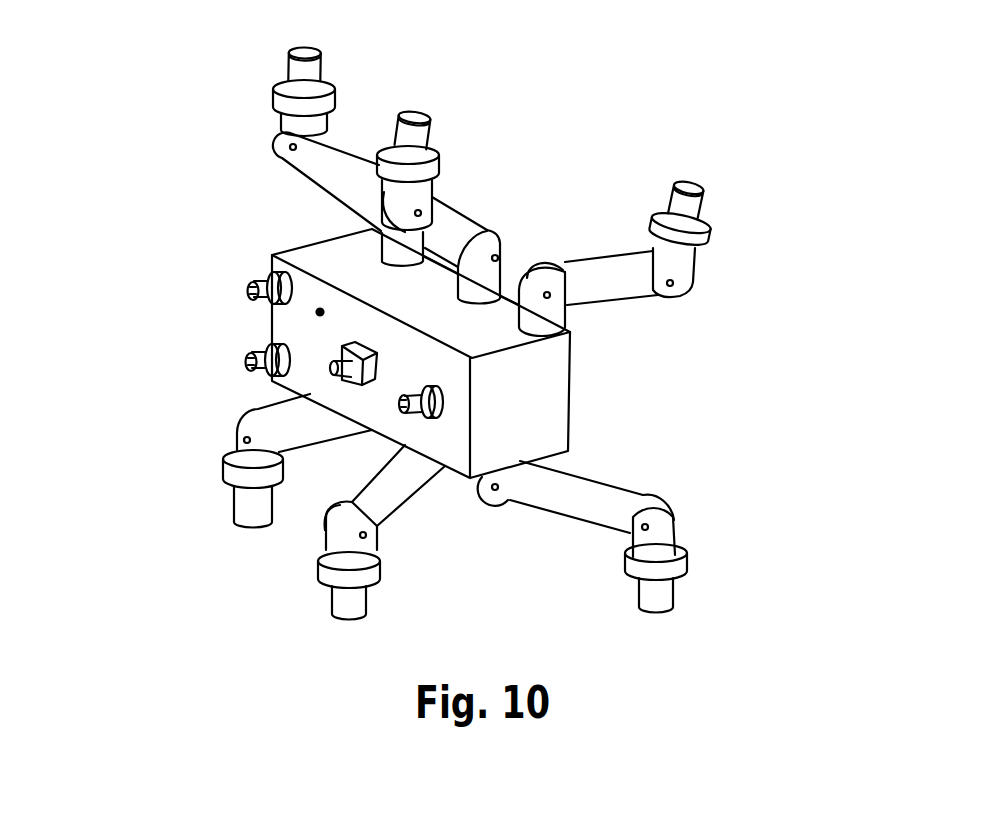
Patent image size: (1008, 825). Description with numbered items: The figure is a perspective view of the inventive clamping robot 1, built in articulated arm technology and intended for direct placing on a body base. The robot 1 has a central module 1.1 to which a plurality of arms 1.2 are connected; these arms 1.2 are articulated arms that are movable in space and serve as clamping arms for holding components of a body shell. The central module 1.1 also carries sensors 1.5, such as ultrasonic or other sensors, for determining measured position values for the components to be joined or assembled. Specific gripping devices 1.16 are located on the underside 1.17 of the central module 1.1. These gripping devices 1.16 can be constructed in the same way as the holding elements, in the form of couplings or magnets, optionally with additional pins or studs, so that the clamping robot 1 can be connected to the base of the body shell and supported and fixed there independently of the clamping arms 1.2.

The clamping robot 1 is at (453, 335).
The central module 1.1 is at (572, 389).
The arm 1.2 is at (709, 277).
The sensor 1.5 is at (352, 388).
The gripping device 1.16 is at (243, 303).
The underside 1.17 is at (320, 310).